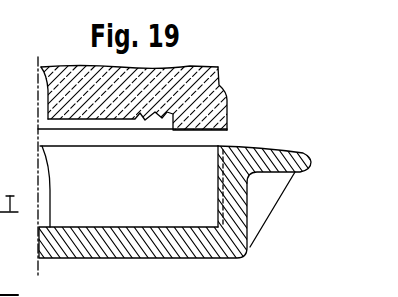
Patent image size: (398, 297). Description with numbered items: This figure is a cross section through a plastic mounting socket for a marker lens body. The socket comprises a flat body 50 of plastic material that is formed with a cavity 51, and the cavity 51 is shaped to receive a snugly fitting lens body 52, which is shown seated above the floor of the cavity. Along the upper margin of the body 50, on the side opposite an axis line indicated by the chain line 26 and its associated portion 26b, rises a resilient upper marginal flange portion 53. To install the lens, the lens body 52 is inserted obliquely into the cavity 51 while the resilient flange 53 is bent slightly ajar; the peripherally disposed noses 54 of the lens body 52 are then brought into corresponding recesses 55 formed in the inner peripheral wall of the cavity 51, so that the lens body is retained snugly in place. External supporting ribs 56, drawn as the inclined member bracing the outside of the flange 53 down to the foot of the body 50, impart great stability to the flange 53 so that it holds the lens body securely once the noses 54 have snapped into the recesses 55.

The flat body 50 is at (197, 203).
The cavity 51 is at (145, 203).
The lens body 52 is at (149, 91).
The resilient upper marginal flange portion 53 is at (277, 148).
The peripherally disposed noses 54 is at (40, 88).
The recesses 55 is at (44, 175).
The external supporting ribs 56 is at (272, 190).
The axis / mounting member 26 is at (19, 167).
The portion of member 26 26b is at (14, 195).